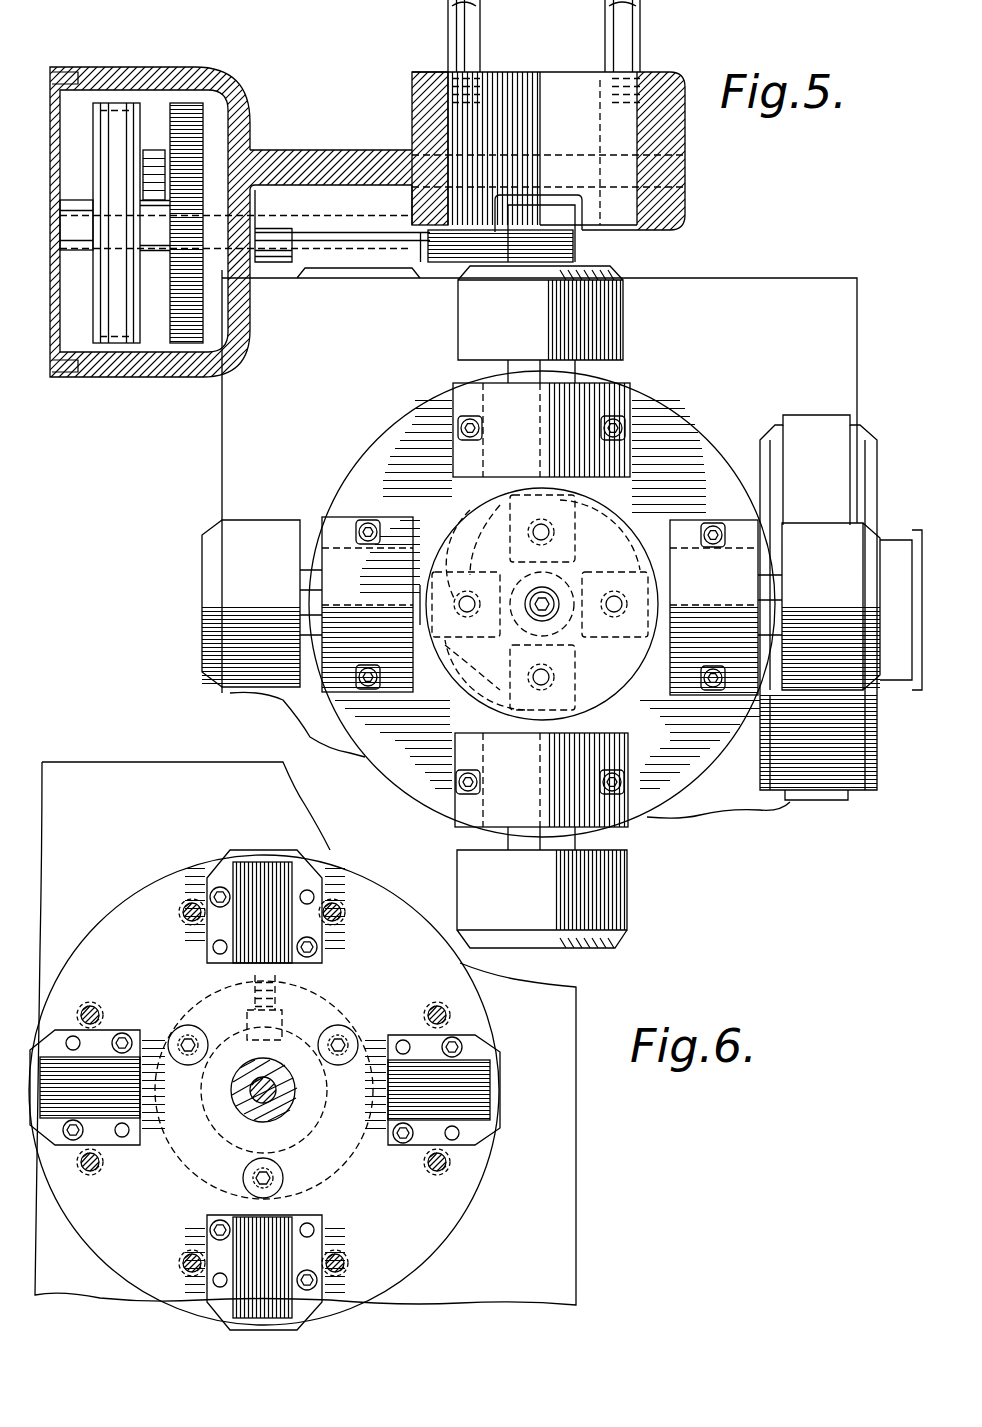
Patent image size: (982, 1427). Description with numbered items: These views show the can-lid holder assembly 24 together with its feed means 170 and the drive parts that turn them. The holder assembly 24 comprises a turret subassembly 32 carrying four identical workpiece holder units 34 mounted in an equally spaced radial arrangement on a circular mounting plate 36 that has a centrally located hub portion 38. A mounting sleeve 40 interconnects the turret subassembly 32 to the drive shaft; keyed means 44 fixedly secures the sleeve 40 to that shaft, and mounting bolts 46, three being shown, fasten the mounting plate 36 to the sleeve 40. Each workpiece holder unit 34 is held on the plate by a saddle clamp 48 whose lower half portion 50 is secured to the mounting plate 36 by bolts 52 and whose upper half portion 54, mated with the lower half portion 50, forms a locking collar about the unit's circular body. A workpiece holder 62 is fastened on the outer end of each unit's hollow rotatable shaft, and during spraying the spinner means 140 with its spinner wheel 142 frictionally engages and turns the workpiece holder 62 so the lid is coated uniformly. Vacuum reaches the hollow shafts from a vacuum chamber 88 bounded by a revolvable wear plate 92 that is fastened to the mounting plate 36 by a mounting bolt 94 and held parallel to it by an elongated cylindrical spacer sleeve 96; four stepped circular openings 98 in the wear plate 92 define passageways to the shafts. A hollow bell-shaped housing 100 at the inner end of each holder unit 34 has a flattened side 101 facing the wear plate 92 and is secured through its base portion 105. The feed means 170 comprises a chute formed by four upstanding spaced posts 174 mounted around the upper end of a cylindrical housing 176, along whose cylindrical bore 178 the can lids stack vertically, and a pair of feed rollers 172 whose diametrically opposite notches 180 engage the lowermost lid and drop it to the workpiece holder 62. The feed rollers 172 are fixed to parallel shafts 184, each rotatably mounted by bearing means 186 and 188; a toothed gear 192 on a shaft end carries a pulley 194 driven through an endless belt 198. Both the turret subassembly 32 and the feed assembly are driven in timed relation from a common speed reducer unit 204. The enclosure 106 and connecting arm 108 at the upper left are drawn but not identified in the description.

In FIG. 5, the gear housing 106 is at (232, 68).
In FIG. 5, the housing arm 108 is at (315, 152).
In FIG. 5, the feed means 170 is at (600, 175).
In FIG. 5, the upstanding spaced posts 174 is at (620, 28).
In FIG. 5, the cylindrical housing 176 is at (415, 128).
In FIG. 5, the cylindrical bore 178 is at (455, 110).
In FIG. 5, the notches 180 is at (582, 226).
In FIG. 5, the feed rollers 172 is at (575, 252).
In FIG. 5, the parallel shafts 184 is at (365, 245).
In FIG. 5, the bearing means 186 is at (440, 265).
In FIG. 5, the bearing means 188 is at (272, 265).
In FIG. 5, the toothed gear 192 is at (200, 340).
In FIG. 5, the pulley 194 is at (125, 350).
In FIG. 5, the endless belt 198 is at (120, 355).
In FIG. 5, the holder assembly 24 is at (695, 795).
In FIG. 5, the turret subassembly 32 is at (410, 800).
In FIG. 5, the circular mounting plate 36 is at (412, 454).
In FIG. 6, the circular mounting plate 36 is at (152, 952).
In FIG. 5, the vacuum chamber 88 is at (600, 522).
In FIG. 5, the bell-shaped housing 100 is at (492, 648).
In FIG. 5, the base portion 105 is at (500, 500).
In FIG. 5, the side 101 is at (420, 590).
In FIG. 5, the wear plate 92 is at (475, 690).
In FIG. 5, the mounting bolt 94 is at (547, 610).
In FIG. 6, the mounting bolt 94 is at (245, 1098).
In FIG. 5, the stepped circular openings 98 is at (541, 524).
In FIG. 5, the saddle clamp 48 is at (632, 400).
In FIG. 5, the upper half portion 54 is at (450, 505).
In FIG. 5, the workpiece holder 62 is at (484, 320).
In FIG. 5, the workpiece holder units 34 is at (633, 336).
In FIG. 5, the spinner means 140 is at (800, 805).
In FIG. 5, the spinner wheel 142 is at (840, 800).
In FIG. 6, the speed reducer unit 204 is at (578, 1210).
In FIG. 6, the lower half portion 50 is at (320, 878).
In FIG. 6, the bolts 52 is at (340, 925).
In FIG. 6, the mounting bolts 46 is at (185, 1040).
In FIG. 6, the keyed means 44 is at (282, 1020).
In FIG. 6, the hub portion 38 is at (202, 1108).
In FIG. 6, the mounting sleeve 40 is at (350, 1162).
In FIG. 6, the spacer sleeve 96 is at (275, 1100).